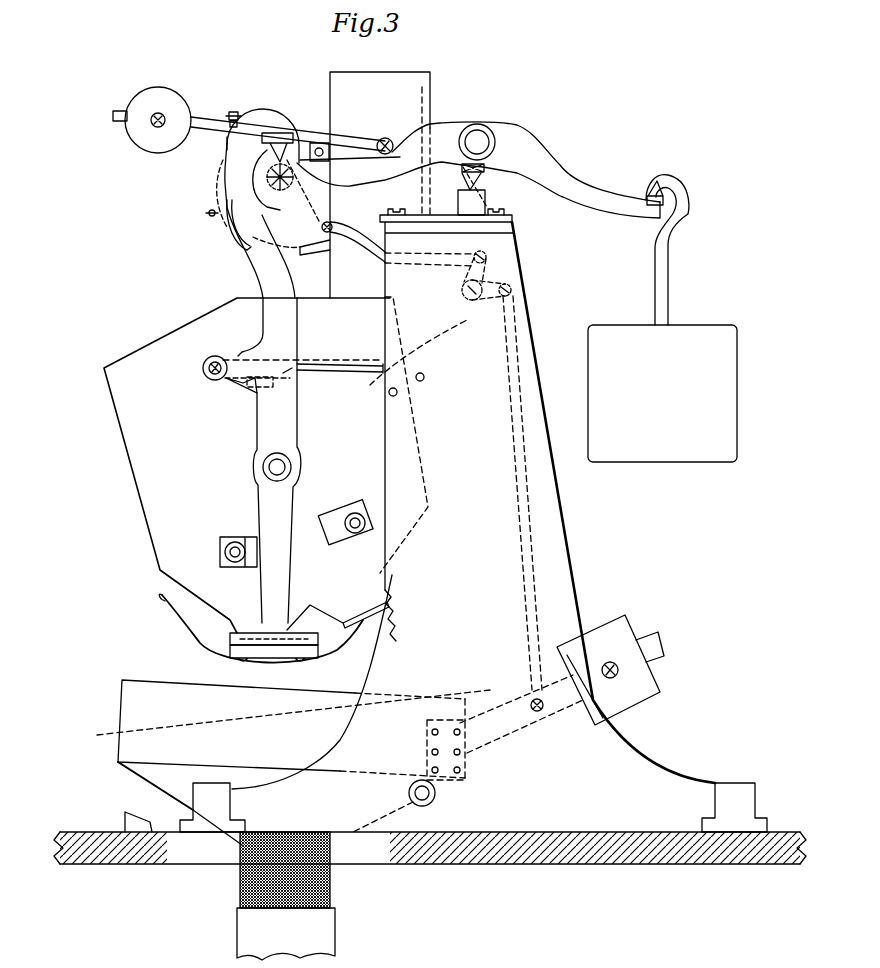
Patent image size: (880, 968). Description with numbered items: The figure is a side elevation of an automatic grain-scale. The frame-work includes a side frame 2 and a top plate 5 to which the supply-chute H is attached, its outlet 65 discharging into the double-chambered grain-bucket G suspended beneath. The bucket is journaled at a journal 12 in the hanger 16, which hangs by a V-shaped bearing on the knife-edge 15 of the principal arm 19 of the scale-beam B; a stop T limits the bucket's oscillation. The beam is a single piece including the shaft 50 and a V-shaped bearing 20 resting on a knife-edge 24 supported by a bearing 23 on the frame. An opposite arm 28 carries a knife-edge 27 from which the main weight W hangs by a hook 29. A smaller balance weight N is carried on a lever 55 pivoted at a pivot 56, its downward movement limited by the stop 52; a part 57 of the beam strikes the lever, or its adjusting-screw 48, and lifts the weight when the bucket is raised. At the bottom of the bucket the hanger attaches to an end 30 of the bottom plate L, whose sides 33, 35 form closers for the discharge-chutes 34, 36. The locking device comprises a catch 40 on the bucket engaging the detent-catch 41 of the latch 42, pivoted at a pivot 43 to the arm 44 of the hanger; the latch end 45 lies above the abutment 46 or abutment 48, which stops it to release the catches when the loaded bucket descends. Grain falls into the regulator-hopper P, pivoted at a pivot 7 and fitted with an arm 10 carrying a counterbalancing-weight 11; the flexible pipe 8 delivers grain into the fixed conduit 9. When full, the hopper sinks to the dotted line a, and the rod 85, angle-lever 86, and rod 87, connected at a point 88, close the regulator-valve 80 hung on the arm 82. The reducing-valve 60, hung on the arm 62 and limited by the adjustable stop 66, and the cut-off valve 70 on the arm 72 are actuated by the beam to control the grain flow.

The supply-chute H is at (380, 172).
The top plate 5 is at (508, 221).
The side frame 2 is at (553, 520).
The bottom plate L is at (255, 710).
The side of bottom plate 33 is at (176, 611).
The grain-bucket G is at (242, 465).
The hanger 16 is at (258, 481).
The journal 12 is at (284, 465).
The outlet 65 is at (275, 244).
The latch pivot 43 is at (211, 357).
The arm of hanger 44 is at (240, 357).
The catch 40 is at (243, 386).
The detent-catch 41 is at (284, 372).
The latch 42 is at (345, 364).
The end of latch 45 is at (407, 358).
The abutment 46 is at (396, 396).
The abutment 48 is at (424, 378).
The stop T is at (234, 541).
The discharge-chute 34 is at (247, 620).
The end of bottom plate 30 is at (276, 650).
The discharge-chute 36 is at (361, 613).
The side of bottom plate 35 is at (357, 630).
The regulator-hopper P is at (291, 729).
The dotted line a is at (337, 711).
The regulator pivot 7 is at (428, 799).
The flexible pipe 8 is at (331, 884).
The fixed conduit 9 is at (331, 928).
The counterbalancing-weight 11 is at (635, 697).
The arm 10 is at (659, 650).
The rod 85 is at (524, 522).
The angle-lever 86 is at (490, 289).
The rod 87 is at (375, 254).
The balance weight N is at (149, 97).
The lever 55 is at (200, 121).
The lever pivot 56 is at (389, 140).
The stop 52 is at (323, 149).
The beam part 57 is at (224, 145).
The knife-edge 15 is at (281, 120).
The arm 82 is at (302, 212).
The arm 62 is at (233, 210).
The adjustable stop 66 is at (208, 213).
The reducing-valve 60 is at (232, 241).
The cut-off valve 70 is at (310, 256).
The regulator-valve 80 is at (326, 252).
The connection point 88 is at (331, 226).
The arm 72 is at (313, 186).
The principal arm 19 is at (350, 163).
The scale-beam B is at (478, 170).
The arm 28 is at (588, 192).
The shaft 50 is at (480, 124).
The V-shaped bearing 20 is at (486, 168).
The knife-edge 24 is at (478, 183).
The bearing 23 is at (460, 197).
The hook 29 is at (680, 185).
The knife-edge 27 is at (652, 183).
The main weight W is at (662, 393).